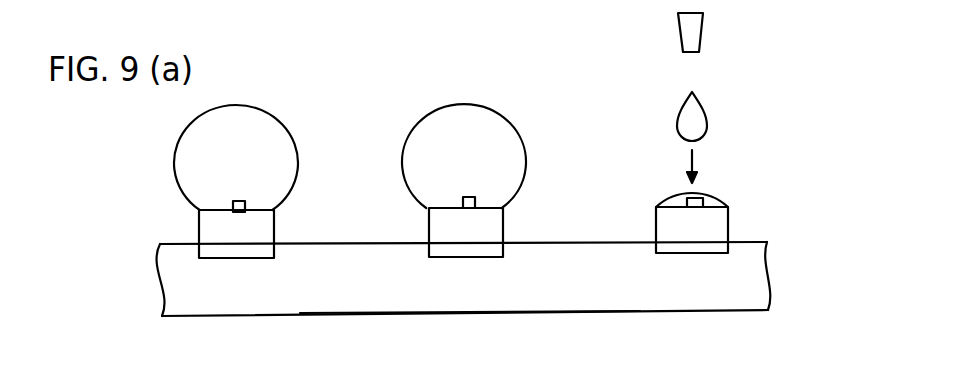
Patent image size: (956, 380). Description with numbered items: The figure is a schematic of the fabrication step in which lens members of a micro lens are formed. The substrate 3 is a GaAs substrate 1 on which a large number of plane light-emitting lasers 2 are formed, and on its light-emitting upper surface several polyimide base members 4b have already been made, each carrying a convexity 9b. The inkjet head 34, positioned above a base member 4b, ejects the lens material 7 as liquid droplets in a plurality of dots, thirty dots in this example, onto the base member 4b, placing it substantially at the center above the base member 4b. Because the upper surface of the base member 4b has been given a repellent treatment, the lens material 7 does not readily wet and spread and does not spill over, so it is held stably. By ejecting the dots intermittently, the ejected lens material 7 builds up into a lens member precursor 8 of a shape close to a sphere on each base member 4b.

The GaAs substrate 1 is at (590, 302).
The plane light-emitting laser 2 is at (238, 258).
The substrate 3 is at (770, 280).
The base member 4b is at (268, 224).
The lens material 7 is at (699, 113).
The lens member precursor 8 is at (270, 123).
The convexity 9b is at (238, 199).
The inkjet head 34 is at (702, 30).